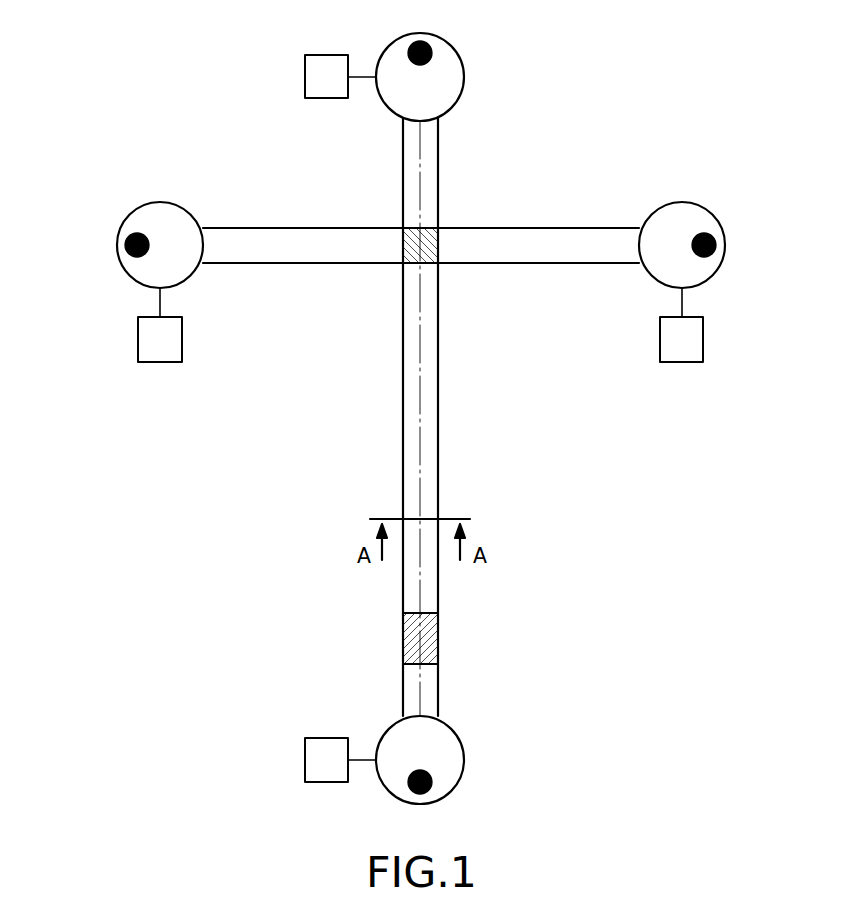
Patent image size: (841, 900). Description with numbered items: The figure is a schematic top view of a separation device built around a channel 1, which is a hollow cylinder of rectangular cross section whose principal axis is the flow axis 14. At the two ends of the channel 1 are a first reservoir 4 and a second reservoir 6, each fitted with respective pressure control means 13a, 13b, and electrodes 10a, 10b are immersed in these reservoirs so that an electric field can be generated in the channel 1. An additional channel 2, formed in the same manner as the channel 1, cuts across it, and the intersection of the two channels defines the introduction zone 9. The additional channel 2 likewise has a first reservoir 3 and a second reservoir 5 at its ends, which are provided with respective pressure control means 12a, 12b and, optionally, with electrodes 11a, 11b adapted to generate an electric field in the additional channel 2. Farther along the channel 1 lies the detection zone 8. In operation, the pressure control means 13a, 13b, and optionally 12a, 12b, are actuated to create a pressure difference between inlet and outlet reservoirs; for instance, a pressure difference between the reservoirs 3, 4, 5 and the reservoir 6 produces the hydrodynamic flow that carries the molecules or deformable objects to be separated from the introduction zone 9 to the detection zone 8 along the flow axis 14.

The channel 1 is at (437, 368).
The additional channel 2 is at (523, 237).
The first reservoir 3 is at (708, 273).
The first reservoir 4 is at (455, 88).
The second reservoir 5 is at (183, 216).
The second reservoir 6 is at (455, 742).
The detection zone 8 is at (437, 640).
The introduction zone 9 is at (424, 258).
The electrode 10a is at (412, 50).
The electrode 10b is at (410, 787).
The electrode 11a is at (716, 243).
The electrode 11b is at (125, 243).
The pressure control means 12a is at (703, 340).
The pressure control means 12b is at (140, 348).
The pressure control means 13a is at (305, 85).
The pressure control means 13b is at (305, 762).
The flow axis 14 is at (420, 448).